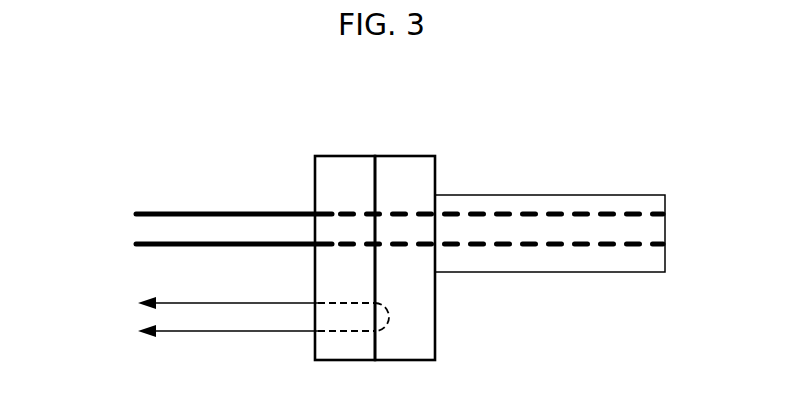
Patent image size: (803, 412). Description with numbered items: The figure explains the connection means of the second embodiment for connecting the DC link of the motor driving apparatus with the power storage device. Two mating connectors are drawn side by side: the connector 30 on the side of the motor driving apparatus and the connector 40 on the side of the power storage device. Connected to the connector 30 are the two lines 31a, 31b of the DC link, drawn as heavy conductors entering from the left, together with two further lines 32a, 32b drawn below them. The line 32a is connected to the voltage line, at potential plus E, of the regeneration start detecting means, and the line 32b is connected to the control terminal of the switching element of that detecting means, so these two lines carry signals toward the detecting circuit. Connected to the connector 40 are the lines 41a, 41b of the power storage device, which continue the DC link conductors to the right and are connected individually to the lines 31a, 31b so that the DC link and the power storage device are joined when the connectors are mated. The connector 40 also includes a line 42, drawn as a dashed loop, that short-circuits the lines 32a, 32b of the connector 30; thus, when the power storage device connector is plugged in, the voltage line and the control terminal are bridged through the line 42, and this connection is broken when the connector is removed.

The connector on the side of the motor driving apparatus 30 is at (350, 156).
The connector on the side of the power storage device 40 is at (412, 156).
The line of the DC link 31a is at (366, 204).
The line of the DC link 31b is at (366, 244).
The line of the power storage device 41a is at (555, 213).
The line of the power storage device 41b is at (562, 243).
The line 32a is at (268, 302).
The line 32b is at (163, 332).
The line 42 is at (392, 320).